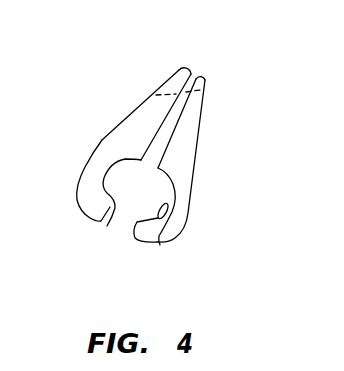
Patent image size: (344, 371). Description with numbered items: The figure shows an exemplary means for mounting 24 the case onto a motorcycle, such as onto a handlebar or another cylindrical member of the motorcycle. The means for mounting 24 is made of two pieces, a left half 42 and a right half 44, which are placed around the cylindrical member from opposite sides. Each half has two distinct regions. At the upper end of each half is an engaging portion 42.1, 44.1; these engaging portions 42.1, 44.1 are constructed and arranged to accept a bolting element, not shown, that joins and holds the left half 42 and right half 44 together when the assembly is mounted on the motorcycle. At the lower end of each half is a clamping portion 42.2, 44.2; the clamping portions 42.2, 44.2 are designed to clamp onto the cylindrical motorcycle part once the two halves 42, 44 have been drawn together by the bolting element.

The means for mounting 24 is at (123, 75).
The left half 42 is at (103, 142).
The engaging portion 42.1 is at (166, 83).
The clamping portion 42.2 is at (107, 226).
The right half 44 is at (195, 160).
The engaging portion 44.1 is at (204, 90).
The clamping portion 44.2 is at (160, 245).